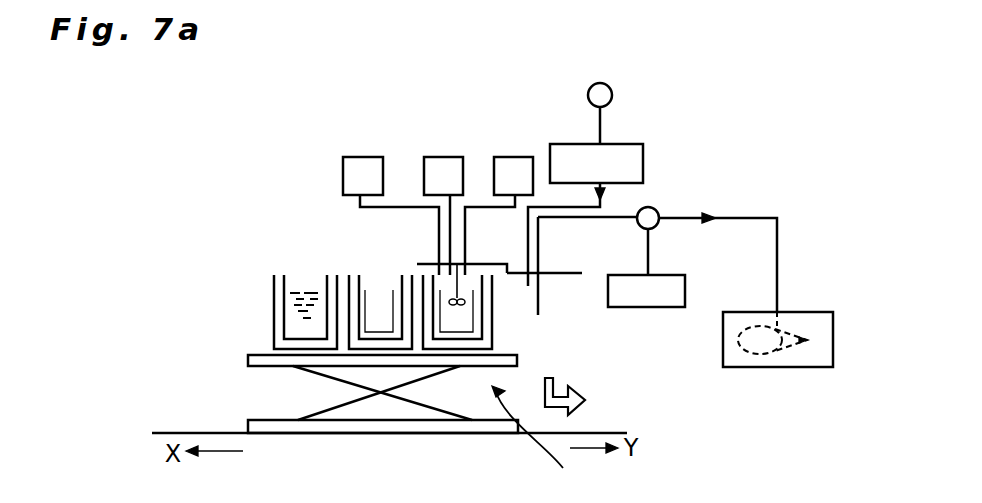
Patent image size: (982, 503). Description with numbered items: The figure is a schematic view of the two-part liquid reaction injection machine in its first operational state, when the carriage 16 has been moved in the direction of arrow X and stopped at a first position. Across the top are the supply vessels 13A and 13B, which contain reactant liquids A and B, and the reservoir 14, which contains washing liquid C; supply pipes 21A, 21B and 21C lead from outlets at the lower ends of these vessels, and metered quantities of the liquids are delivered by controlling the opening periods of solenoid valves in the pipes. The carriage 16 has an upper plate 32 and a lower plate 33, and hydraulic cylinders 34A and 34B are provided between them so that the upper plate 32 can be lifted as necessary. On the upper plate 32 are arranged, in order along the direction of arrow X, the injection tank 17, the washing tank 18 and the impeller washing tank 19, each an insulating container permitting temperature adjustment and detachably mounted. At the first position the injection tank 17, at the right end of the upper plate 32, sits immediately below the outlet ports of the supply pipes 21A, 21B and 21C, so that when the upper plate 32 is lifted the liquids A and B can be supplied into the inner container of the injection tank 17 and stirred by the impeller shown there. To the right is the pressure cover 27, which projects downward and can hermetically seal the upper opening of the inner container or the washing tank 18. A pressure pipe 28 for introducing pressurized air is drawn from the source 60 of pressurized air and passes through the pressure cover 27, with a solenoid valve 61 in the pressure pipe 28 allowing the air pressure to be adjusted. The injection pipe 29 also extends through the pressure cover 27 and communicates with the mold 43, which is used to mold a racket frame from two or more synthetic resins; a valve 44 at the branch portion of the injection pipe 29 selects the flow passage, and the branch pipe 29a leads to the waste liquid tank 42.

The supply vessel 13A is at (360, 157).
The supply vessel 13B is at (437, 157).
The reservoir 14 is at (517, 157).
The supply pipe 21A is at (400, 208).
The supply pipe 21B is at (450, 203).
The supply pipe 21C is at (470, 248).
The pressure cover 27 is at (557, 272).
The pressure pipe 28 is at (605, 205).
The source of pressurized air 60 is at (606, 84).
The solenoid valve 61 is at (630, 144).
The valve 44 is at (655, 210).
The injection pipe 29 is at (738, 215).
The branch pipe 29a is at (650, 248).
The waste liquid tank 42 is at (686, 287).
The mold 43 is at (818, 312).
The impeller washing tank 19 is at (278, 308).
The washing tank 18 is at (352, 278).
The injection tank 17 is at (484, 322).
The upper plate 32 is at (517, 357).
The lower plate 33 is at (282, 427).
The hydraulic cylinder 34A is at (356, 403).
The hydraulic cylinder 34B is at (417, 403).
The carriage 16 is at (542, 441).